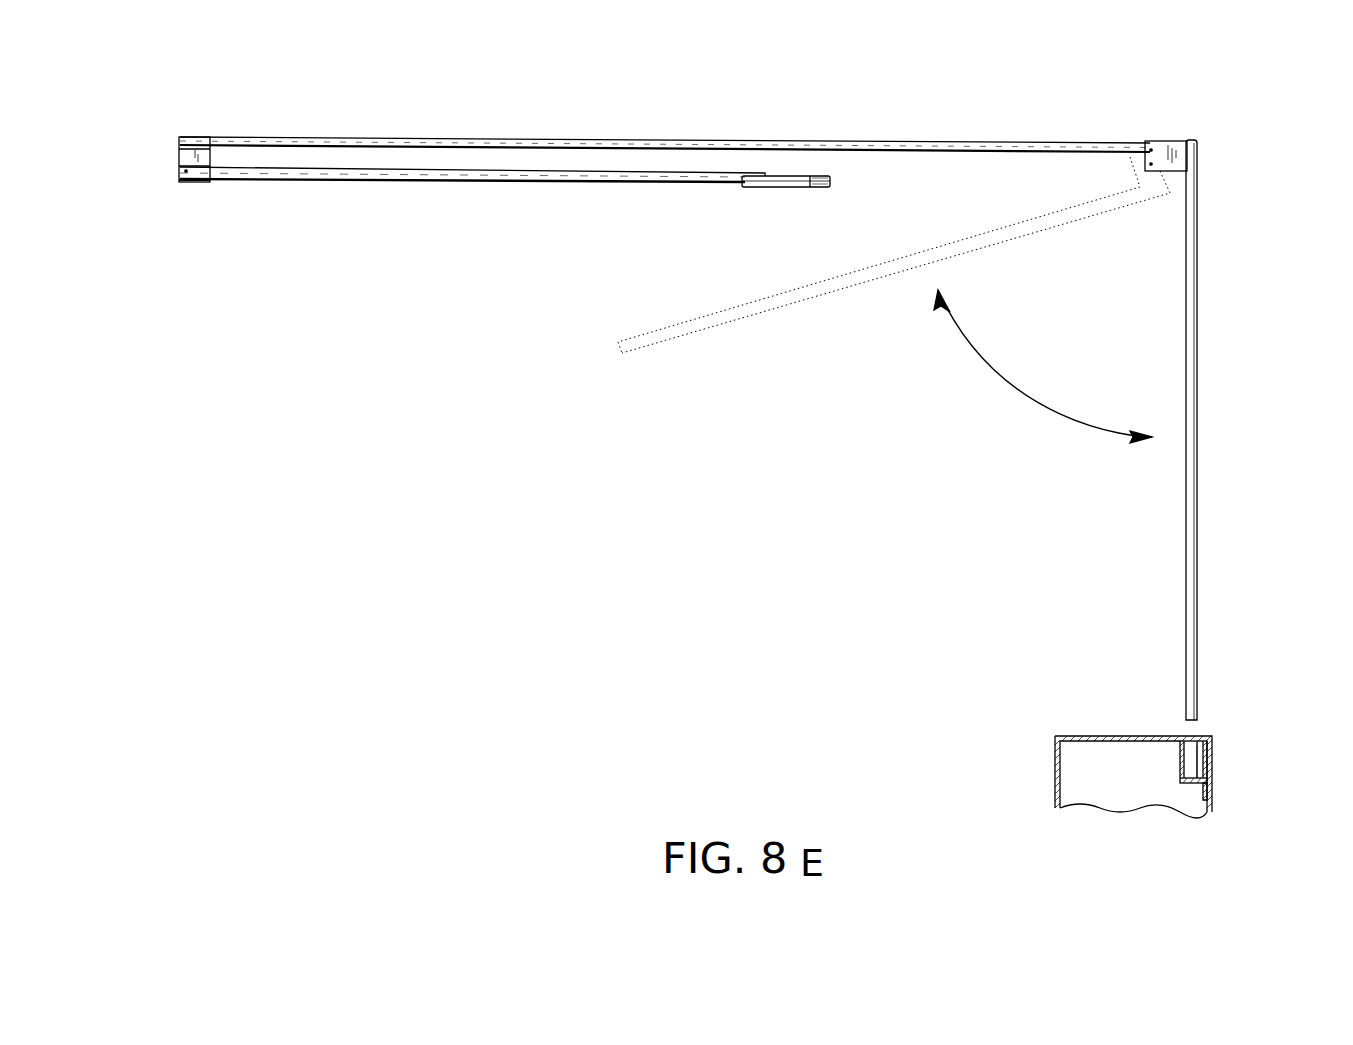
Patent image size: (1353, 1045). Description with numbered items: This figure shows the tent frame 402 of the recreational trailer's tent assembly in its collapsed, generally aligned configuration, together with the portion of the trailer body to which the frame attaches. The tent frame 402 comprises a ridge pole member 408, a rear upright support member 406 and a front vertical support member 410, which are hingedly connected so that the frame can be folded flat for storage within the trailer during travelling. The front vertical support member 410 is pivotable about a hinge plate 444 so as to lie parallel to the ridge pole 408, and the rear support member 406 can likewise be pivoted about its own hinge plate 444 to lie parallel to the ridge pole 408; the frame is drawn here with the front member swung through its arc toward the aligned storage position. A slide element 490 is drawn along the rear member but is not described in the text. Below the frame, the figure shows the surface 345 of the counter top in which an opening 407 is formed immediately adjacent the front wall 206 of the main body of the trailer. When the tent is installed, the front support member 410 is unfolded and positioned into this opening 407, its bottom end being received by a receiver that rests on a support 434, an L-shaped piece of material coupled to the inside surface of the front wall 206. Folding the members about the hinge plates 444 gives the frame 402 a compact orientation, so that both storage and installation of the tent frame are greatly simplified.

The tent frame 402 is at (699, 74).
The ridge pole member 408 is at (925, 140).
The rear upright support member 406 is at (475, 180).
The slide bracket 490 is at (770, 187).
The hinge plate 444 is at (178, 162).
The front vertical support member 410 is at (1205, 468).
The surface of the counter top 345 is at (1120, 735).
The opening 407 is at (1193, 745).
The front wall 206 is at (1207, 752).
The support 434 is at (1207, 786).